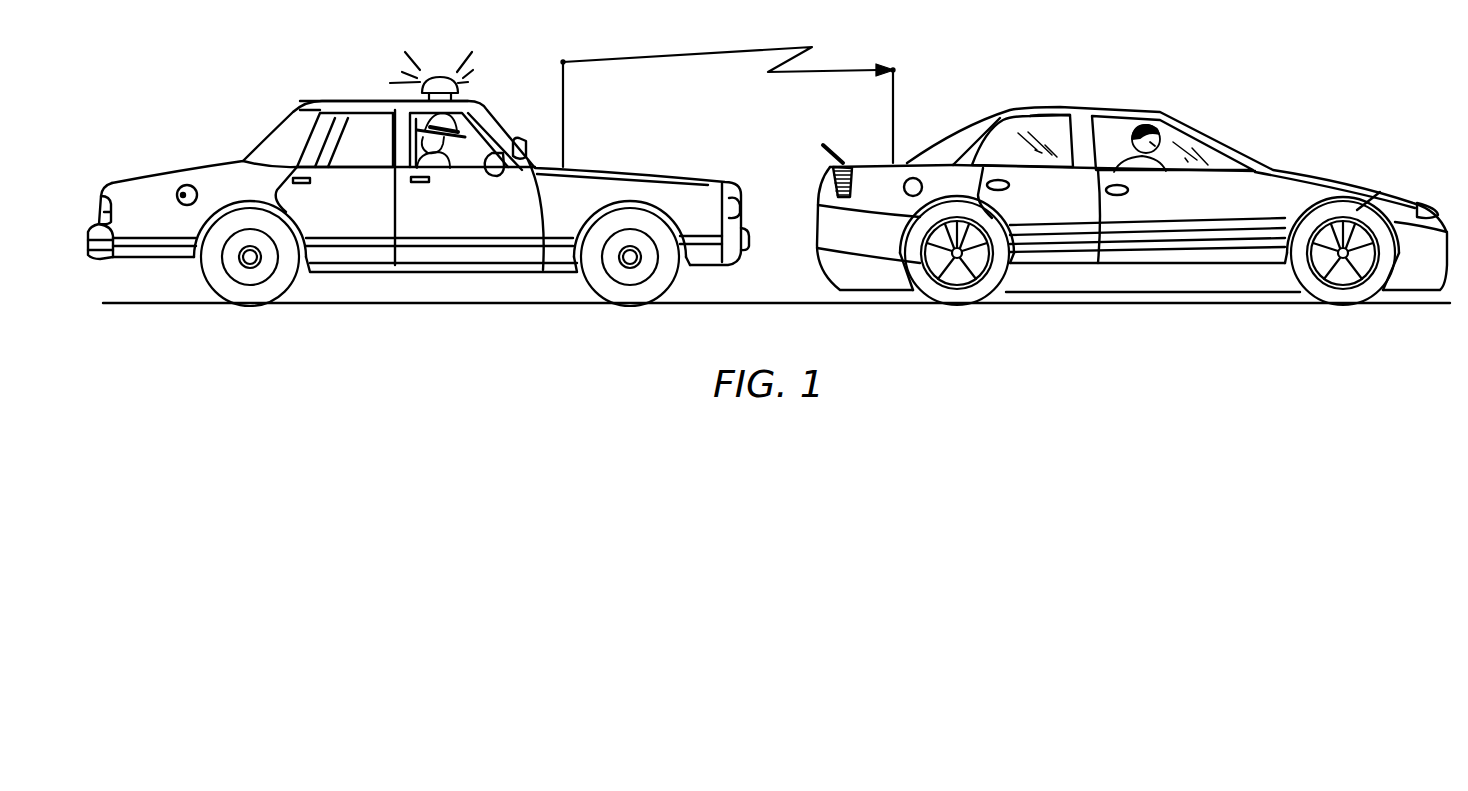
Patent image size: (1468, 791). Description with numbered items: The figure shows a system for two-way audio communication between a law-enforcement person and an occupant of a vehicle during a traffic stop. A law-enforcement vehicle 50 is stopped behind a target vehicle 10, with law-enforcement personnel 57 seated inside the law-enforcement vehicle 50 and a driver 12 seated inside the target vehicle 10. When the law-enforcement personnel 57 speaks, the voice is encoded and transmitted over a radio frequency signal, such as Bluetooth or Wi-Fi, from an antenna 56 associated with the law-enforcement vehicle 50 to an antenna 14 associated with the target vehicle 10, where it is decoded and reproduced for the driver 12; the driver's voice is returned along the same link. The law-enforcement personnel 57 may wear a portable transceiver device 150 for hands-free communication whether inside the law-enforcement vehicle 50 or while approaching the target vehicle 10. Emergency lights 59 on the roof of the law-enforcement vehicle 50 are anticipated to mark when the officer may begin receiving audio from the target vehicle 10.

The target vehicle 10 is at (1309, 170).
The driver 12 is at (1133, 120).
The antenna 14 is at (897, 78).
The law-enforcement vehicle 50 is at (276, 133).
The antenna 56 is at (565, 121).
The law-enforcement personnel 57 is at (437, 170).
The emergency lights 59 is at (443, 76).
The portable transceiver device 150 is at (478, 103).